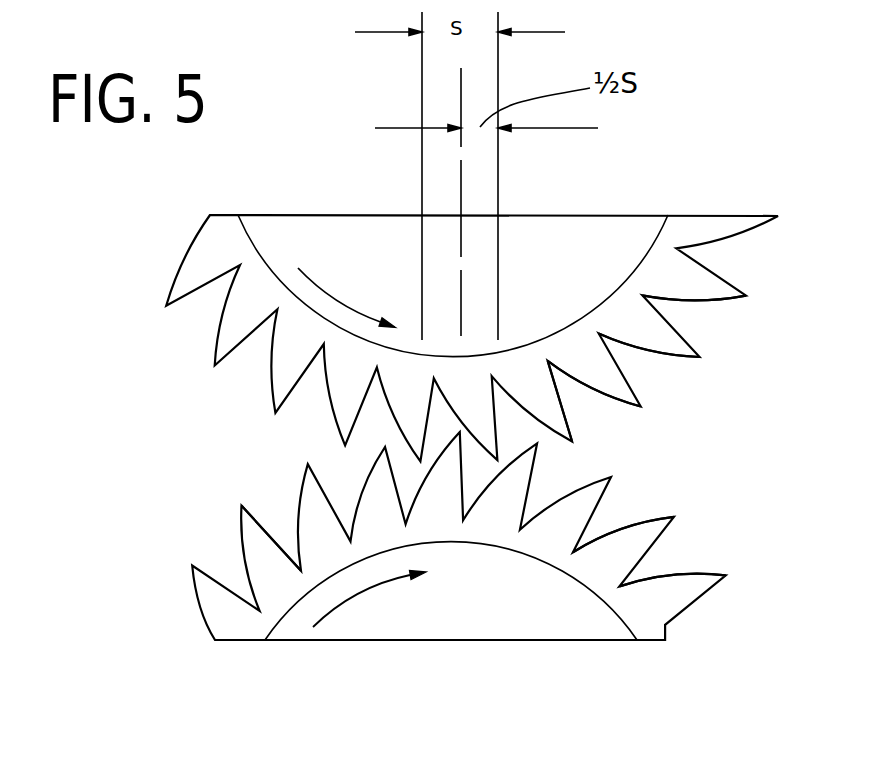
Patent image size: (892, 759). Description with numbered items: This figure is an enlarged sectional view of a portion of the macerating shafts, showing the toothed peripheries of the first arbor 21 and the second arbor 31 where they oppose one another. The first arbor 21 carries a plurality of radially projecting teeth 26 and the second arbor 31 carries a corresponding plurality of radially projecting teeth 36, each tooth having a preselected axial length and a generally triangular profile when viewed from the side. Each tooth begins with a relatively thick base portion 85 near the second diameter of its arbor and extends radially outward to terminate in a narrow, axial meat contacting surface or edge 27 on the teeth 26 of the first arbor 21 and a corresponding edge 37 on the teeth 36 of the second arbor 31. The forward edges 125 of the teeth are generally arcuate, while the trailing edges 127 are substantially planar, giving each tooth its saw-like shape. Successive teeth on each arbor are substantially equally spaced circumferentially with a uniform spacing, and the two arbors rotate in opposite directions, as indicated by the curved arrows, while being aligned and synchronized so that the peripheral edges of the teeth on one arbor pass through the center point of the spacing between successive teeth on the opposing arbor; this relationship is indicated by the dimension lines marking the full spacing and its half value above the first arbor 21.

The first arbor 21 is at (326, 240).
The second arbor 31 is at (382, 621).
The base portion 85 is at (585, 355).
The radially projecting teeth 26 is at (678, 347).
The meat contacting edge 27 is at (643, 403).
The trailing edges 127 is at (540, 468).
The forward edges 125 is at (333, 418).
The meat contacting edge 37 is at (606, 483).
The radially projecting teeth 36 is at (643, 541).